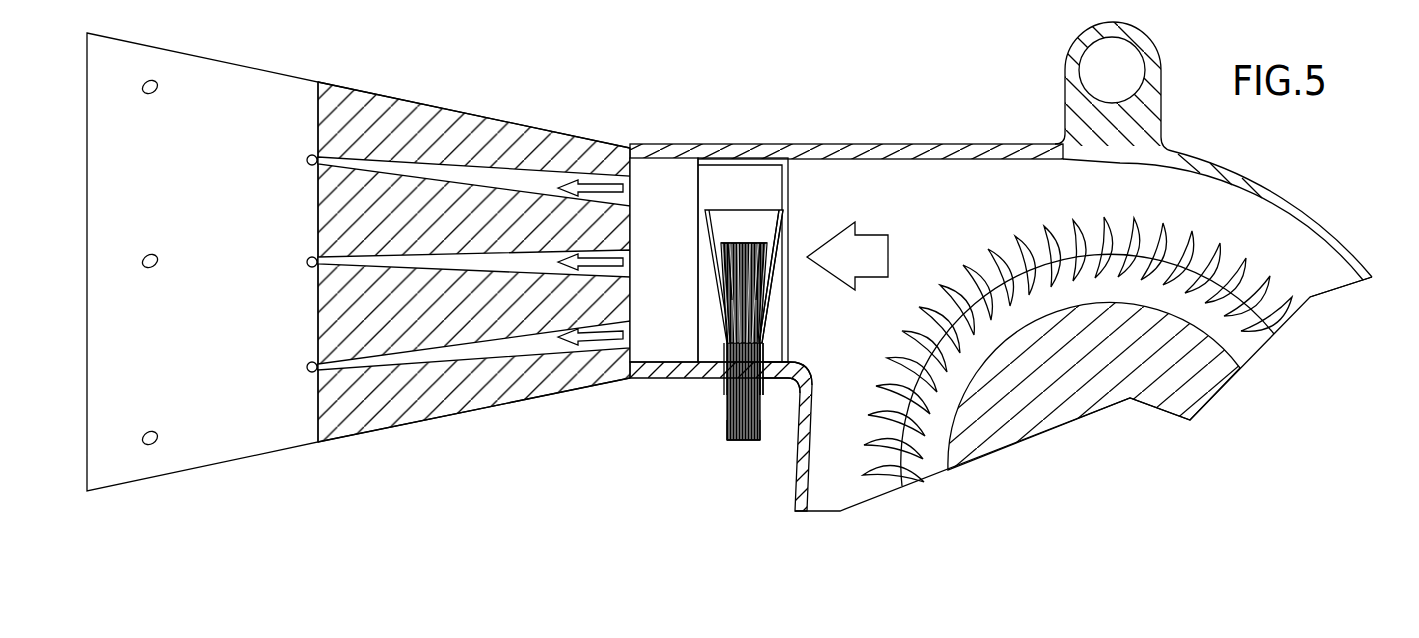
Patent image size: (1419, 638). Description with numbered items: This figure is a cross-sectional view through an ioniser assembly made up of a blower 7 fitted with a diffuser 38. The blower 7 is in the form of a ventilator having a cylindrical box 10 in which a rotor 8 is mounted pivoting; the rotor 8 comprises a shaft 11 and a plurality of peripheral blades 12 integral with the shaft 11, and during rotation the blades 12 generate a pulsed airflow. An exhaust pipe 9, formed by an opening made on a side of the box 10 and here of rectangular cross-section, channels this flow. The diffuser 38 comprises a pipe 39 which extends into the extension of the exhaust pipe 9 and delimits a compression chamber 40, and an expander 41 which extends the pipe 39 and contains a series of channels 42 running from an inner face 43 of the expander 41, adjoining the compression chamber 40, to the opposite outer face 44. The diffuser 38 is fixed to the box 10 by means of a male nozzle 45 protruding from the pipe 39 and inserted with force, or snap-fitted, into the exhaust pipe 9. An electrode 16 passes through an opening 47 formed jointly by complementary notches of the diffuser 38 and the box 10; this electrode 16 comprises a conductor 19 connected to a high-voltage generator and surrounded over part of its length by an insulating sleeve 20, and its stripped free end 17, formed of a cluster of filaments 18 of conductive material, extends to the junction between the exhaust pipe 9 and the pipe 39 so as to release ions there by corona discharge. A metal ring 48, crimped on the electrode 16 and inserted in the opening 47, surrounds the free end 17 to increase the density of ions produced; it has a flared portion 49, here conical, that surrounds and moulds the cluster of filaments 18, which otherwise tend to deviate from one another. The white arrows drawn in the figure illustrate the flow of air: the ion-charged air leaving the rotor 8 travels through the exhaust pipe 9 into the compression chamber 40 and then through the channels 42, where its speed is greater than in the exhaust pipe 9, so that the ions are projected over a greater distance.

The blower 7 is at (1293, 195).
The rotor 8 is at (1060, 243).
The exhaust pipe 9 is at (862, 183).
The box 10 is at (1330, 248).
The shaft 11 is at (1198, 388).
The peripheral blades 12 is at (1207, 252).
The electrode 16 is at (727, 422).
The free end 17 is at (745, 237).
The cluster of filaments 18 is at (757, 293).
The conductor 19 is at (738, 440).
The sleeve 20 is at (728, 413).
The diffuser 38 is at (486, 118).
The pipe 39 is at (693, 153).
The compression chamber 40 is at (658, 356).
The expander 41 is at (370, 423).
The channels 42 is at (150, 87).
The inner face 43 is at (628, 223).
The outer face 44 is at (257, 82).
The male nozzle 45 is at (760, 162).
The opening 47 is at (767, 372).
The metal ring 48 is at (768, 328).
The flared portion 49 is at (710, 252).